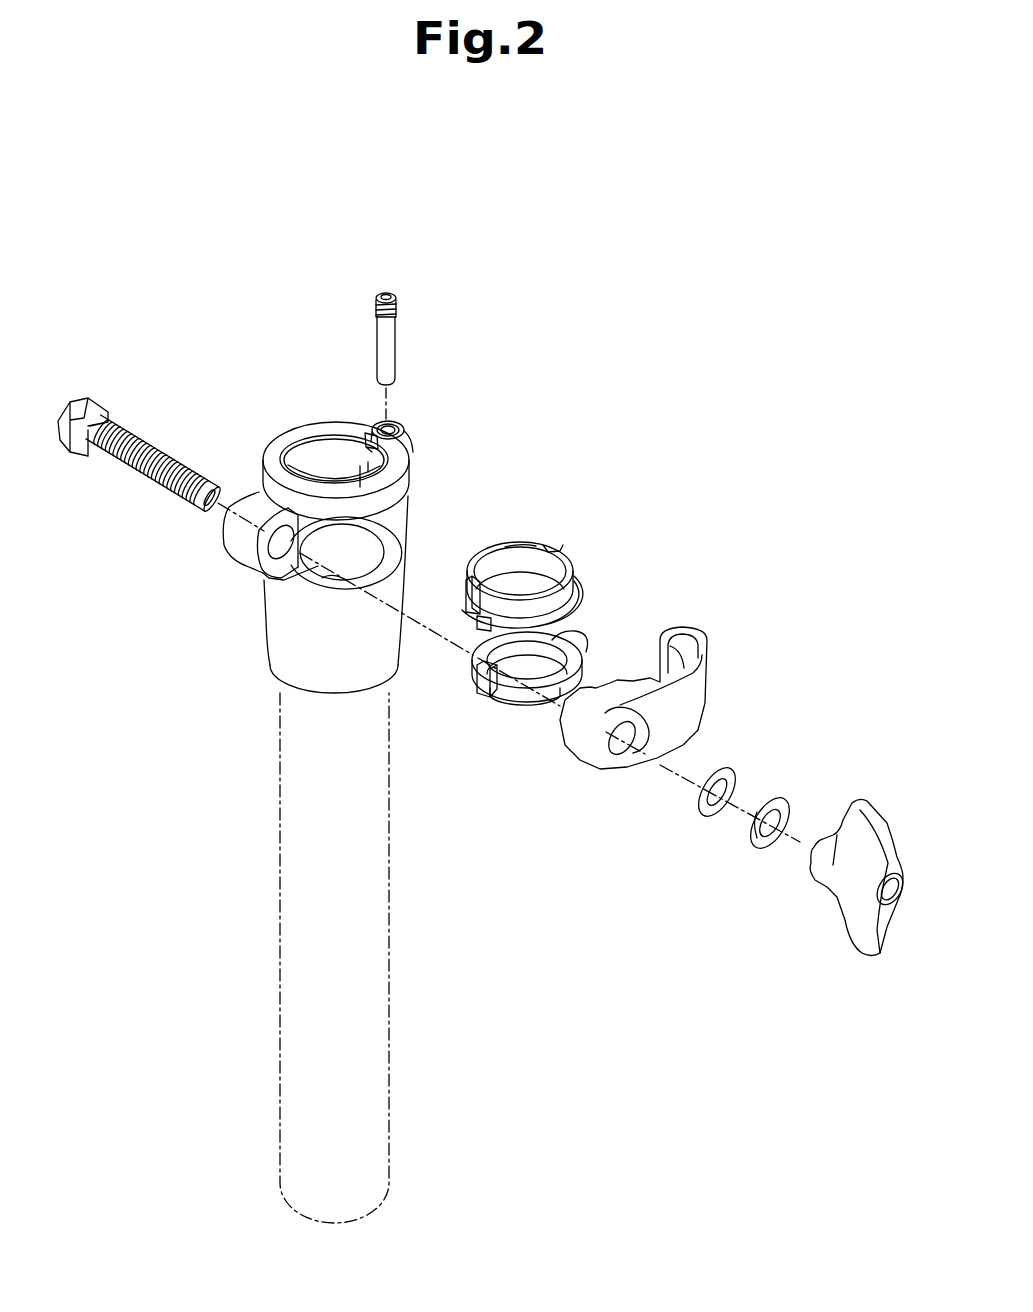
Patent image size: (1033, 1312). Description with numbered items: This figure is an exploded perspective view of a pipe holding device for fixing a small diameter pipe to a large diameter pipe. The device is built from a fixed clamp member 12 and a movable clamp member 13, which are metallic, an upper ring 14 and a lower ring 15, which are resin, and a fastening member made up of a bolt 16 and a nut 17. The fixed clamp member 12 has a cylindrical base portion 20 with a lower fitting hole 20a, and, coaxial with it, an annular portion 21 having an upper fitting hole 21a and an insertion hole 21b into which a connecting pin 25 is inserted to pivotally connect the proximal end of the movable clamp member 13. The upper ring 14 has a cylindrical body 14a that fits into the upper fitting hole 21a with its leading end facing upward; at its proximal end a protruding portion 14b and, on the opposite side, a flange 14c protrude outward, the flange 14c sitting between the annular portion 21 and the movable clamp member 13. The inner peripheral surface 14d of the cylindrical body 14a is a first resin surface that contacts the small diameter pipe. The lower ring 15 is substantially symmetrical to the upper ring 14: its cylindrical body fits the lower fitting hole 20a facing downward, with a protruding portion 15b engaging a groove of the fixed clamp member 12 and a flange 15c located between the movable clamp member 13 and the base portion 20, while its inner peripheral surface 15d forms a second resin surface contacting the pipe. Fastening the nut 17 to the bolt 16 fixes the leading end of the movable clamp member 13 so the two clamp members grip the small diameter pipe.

The fixed clamp member 12 is at (346, 804).
The movable clamp member 13 is at (708, 668).
The upper ring 14 is at (546, 553).
The cylindrical body 14a is at (522, 548).
The protruding portion 14b is at (466, 584).
The flange 14c is at (582, 590).
The inner peripheral surface 14d is at (488, 548).
The lower ring 15 is at (528, 718).
The protruding portion 15b is at (476, 668).
The flange 15c is at (578, 640).
The inner peripheral surface 15d is at (539, 702).
The bolt 16 is at (70, 458).
The nut 17 is at (858, 956).
The base portion 20 is at (270, 644).
The lower fitting hole 20a is at (330, 578).
The annular portion 21 is at (286, 445).
The upper fitting hole 21a is at (360, 446).
The insertion hole 21b is at (404, 424).
The connecting pin 25 is at (398, 305).